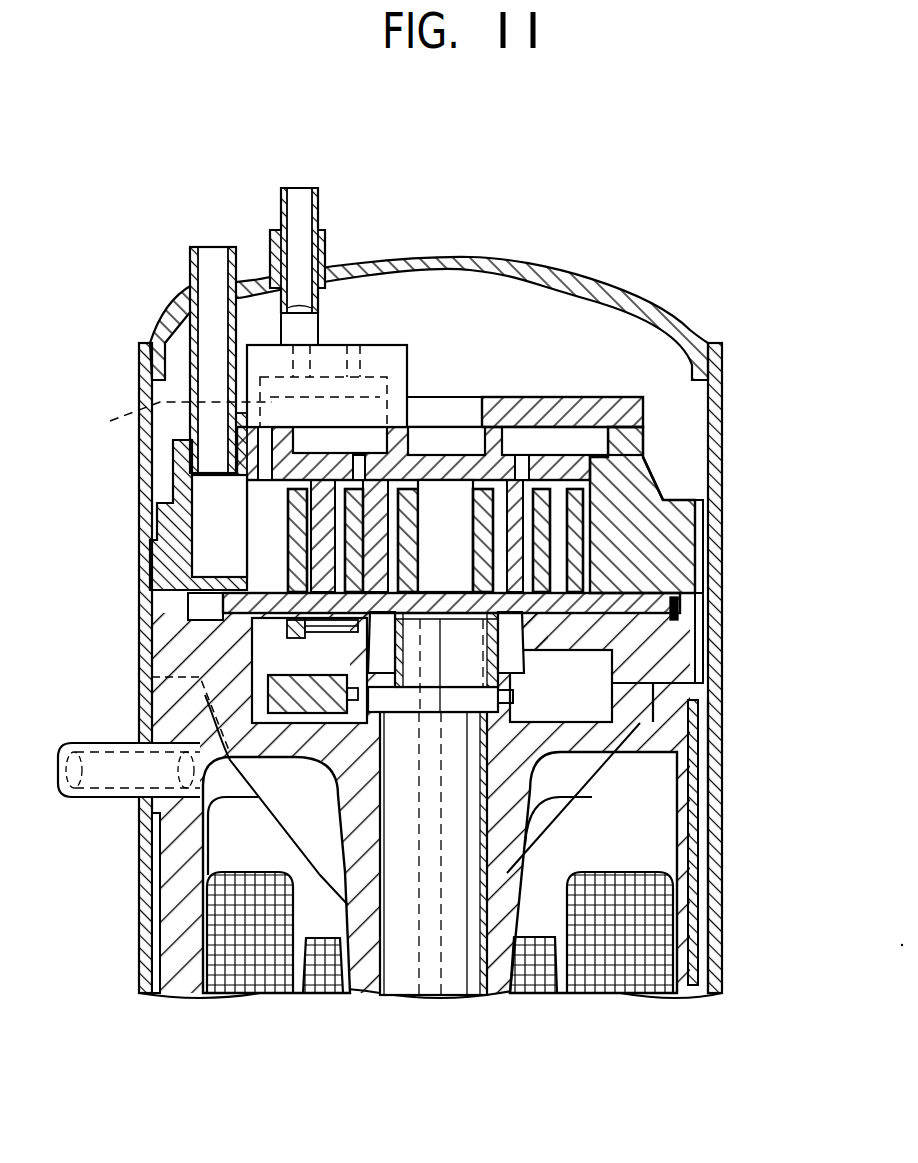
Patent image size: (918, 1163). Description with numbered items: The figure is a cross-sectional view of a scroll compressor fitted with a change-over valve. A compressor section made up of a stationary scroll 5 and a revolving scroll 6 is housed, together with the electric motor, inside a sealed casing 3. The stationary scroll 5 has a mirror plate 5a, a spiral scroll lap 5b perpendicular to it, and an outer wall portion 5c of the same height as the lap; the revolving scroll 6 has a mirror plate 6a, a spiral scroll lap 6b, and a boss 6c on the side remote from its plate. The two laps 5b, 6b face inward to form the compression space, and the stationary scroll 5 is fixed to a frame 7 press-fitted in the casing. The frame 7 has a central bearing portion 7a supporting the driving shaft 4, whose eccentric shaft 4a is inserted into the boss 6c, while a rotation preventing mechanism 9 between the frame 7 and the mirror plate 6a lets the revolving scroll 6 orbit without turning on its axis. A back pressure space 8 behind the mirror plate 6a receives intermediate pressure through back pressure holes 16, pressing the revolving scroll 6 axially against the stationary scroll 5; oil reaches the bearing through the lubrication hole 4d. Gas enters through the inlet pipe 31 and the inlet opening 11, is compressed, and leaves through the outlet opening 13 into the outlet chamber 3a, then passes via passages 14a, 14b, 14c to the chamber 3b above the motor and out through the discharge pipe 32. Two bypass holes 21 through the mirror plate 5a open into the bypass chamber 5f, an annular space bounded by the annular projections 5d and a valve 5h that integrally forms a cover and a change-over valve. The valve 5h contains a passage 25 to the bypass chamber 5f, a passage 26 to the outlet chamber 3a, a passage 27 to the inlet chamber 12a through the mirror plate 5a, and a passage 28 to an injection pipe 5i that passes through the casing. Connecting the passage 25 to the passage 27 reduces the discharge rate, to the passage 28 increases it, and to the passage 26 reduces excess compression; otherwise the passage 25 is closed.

The sealed casing 3 is at (585, 282).
The outlet chamber 3a is at (357, 292).
The chamber 3b is at (668, 848).
The driving shaft 4 is at (395, 828).
The eccentric shaft 4a is at (482, 662).
The lubrication hole 4d is at (468, 795).
The stationary scroll 5 is at (663, 473).
The mirror plate 5a is at (590, 478).
The spiral scroll lap 5b is at (478, 530).
The outer wall portion 5c is at (673, 554).
The annular projections 5d is at (628, 438).
The bypass chamber 5f is at (573, 445).
The valve 5h is at (365, 425).
The injection pipe 5i is at (312, 188).
The revolving scroll 6 is at (649, 628).
The mirror plate 6a is at (668, 607).
The spiral scroll lap 6b is at (420, 533).
The boss 6c is at (513, 686).
The frame 7 is at (640, 712).
The bearing portion 7a is at (520, 838).
The back pressure space 8 is at (630, 712).
The revolving scroll rotation preventing mechanism 9 is at (268, 655).
The inlet opening 11 is at (212, 513).
The inlet chamber 12a is at (267, 540).
The outlet opening 13 is at (452, 480).
The passage 14a is at (696, 512).
The passage 14b is at (700, 640).
The passage 14c is at (700, 790).
The back pressure holes 16 is at (369, 630).
The bypass holes 21 is at (358, 456).
The passage 25 is at (440, 395).
The passage 26 is at (385, 345).
The passage 27 is at (270, 437).
The passage 28 is at (278, 340).
The inlet pipe 31 is at (188, 253).
The discharge pipe 32 is at (84, 799).